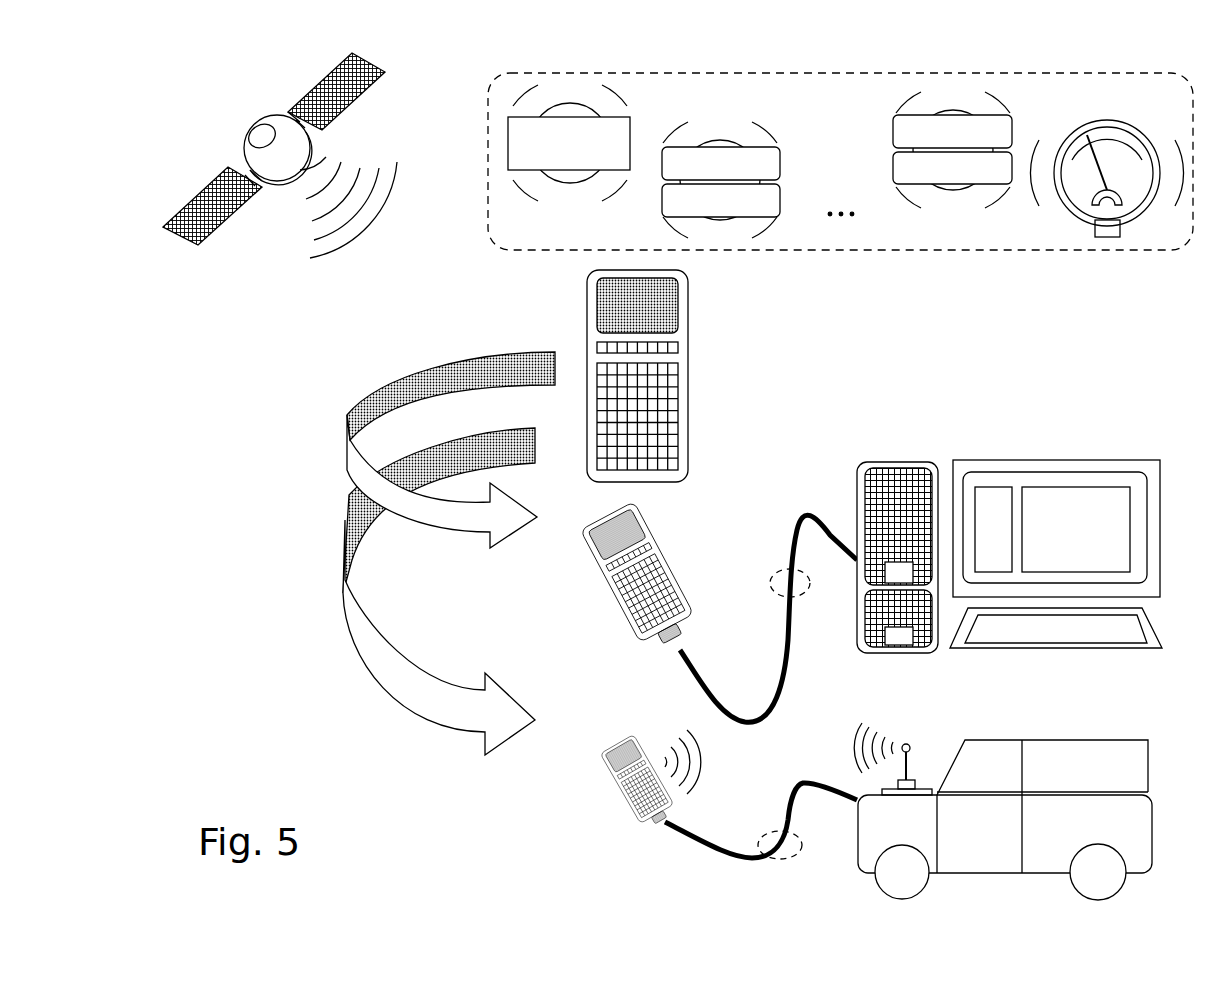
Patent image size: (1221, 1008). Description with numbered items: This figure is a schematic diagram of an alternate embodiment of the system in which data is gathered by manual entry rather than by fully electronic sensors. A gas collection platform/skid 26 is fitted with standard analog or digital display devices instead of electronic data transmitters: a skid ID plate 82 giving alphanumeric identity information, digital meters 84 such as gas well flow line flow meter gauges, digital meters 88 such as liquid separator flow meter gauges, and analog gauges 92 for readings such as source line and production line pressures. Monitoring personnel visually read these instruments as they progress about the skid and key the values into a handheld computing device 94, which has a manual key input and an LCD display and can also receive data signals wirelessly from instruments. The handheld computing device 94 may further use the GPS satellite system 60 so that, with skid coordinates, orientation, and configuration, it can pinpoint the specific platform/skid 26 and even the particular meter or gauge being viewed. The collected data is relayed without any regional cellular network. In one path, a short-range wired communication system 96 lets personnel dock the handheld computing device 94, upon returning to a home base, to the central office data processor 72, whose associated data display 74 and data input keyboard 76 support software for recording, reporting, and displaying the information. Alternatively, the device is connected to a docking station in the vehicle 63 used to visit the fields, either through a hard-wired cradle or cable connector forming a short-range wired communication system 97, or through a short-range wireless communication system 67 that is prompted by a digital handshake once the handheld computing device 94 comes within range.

The GPS satellite system 60 is at (275, 113).
The gas collection platform/skid (visual data collection) 26 is at (875, 250).
The skid ID plate 82 is at (571, 97).
The digital meters 84 is at (720, 125).
The digital meters 88 is at (954, 90).
The analog gauges 92 is at (1107, 118).
The handheld computing device 94 is at (700, 362).
The short-range wired communication system 96 is at (773, 576).
The short-range wired communication system 97 is at (762, 833).
The central office data processor 72 is at (892, 458).
The data display 74 is at (1010, 458).
The data input keyboard 76 is at (1068, 652).
The vehicle 63 is at (1148, 832).
The short-range wireless communication system 67 is at (912, 772).